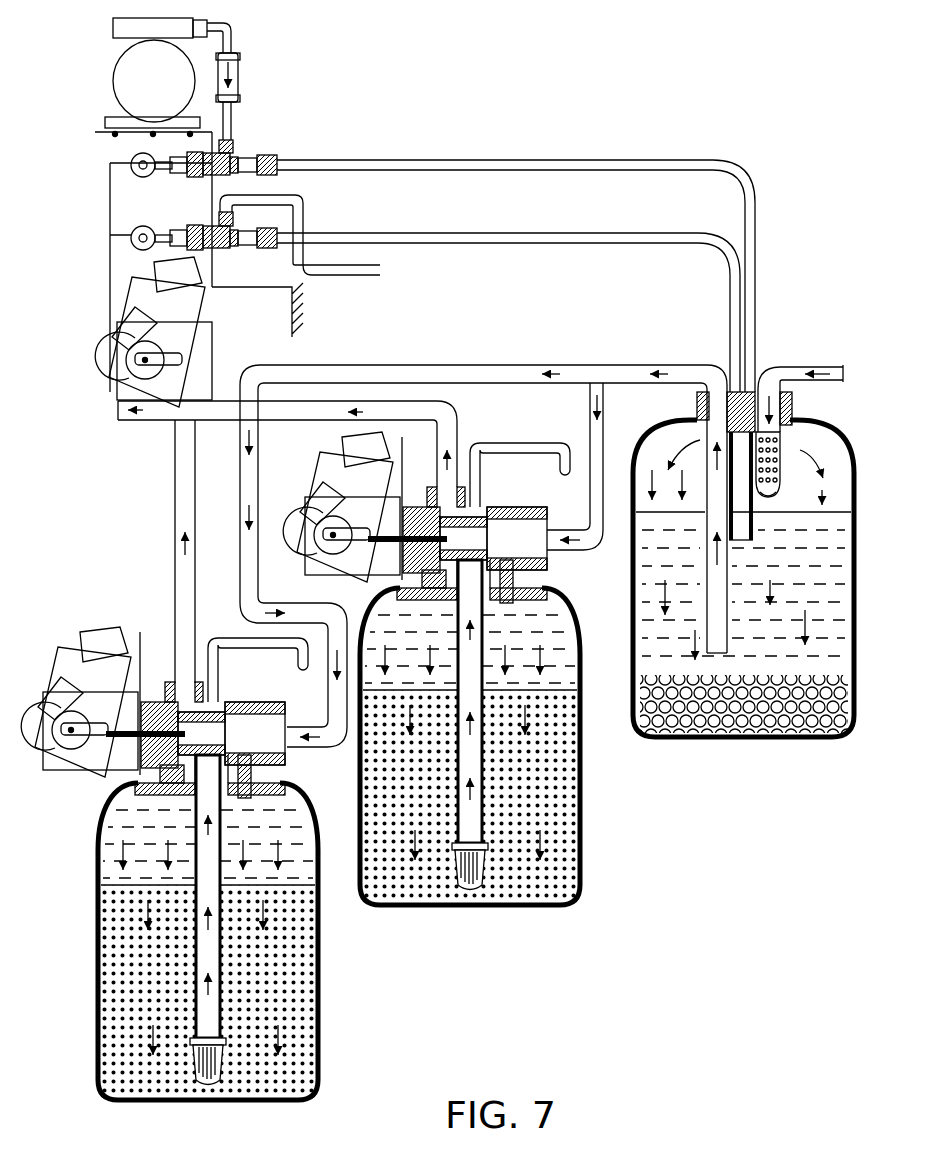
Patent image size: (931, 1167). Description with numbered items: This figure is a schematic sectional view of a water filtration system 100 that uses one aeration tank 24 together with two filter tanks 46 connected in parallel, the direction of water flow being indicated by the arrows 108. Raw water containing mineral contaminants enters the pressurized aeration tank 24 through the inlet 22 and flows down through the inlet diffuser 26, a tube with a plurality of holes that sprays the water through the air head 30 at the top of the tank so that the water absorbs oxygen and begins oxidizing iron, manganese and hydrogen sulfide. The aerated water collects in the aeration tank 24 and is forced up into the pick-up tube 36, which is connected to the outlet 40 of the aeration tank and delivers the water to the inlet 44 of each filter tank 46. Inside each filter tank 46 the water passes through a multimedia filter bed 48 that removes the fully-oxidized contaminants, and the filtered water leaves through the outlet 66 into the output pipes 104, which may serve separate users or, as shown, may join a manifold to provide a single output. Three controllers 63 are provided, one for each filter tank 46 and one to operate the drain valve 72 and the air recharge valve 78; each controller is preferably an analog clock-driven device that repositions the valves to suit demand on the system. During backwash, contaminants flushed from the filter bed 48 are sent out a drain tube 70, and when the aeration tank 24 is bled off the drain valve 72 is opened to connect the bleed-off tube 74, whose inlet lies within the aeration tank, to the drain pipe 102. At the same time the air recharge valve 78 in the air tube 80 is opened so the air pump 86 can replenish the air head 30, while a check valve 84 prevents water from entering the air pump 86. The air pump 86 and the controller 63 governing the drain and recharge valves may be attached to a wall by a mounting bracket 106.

The water filtration system 100 is at (393, 114).
The check valve 84 is at (240, 72).
The air pump 86 is at (138, 96).
The air recharge valve 78 is at (254, 157).
The air tube 80 is at (480, 160).
The drain valve 72 is at (250, 232).
The drain pipe 102 is at (368, 276).
The mounting bracket 106 is at (288, 322).
The controller 63 is at (118, 390).
The arrows 108 is at (598, 372).
The output pipes 104 is at (428, 405).
The drain tube 70 is at (528, 443).
The outlet 66 is at (433, 487).
The inlet 44 is at (505, 567).
The filter tank 46 is at (560, 900).
The multimedia filter bed 48 is at (572, 668).
The air head 30 is at (855, 485).
The pick-up tube 36 is at (708, 590).
The outlet 40 is at (697, 385).
The inlet 22 is at (780, 385).
The inlet diffuser 26 is at (843, 372).
The aeration tank 24 is at (783, 450).
The bleed-off tube 74 is at (768, 497).